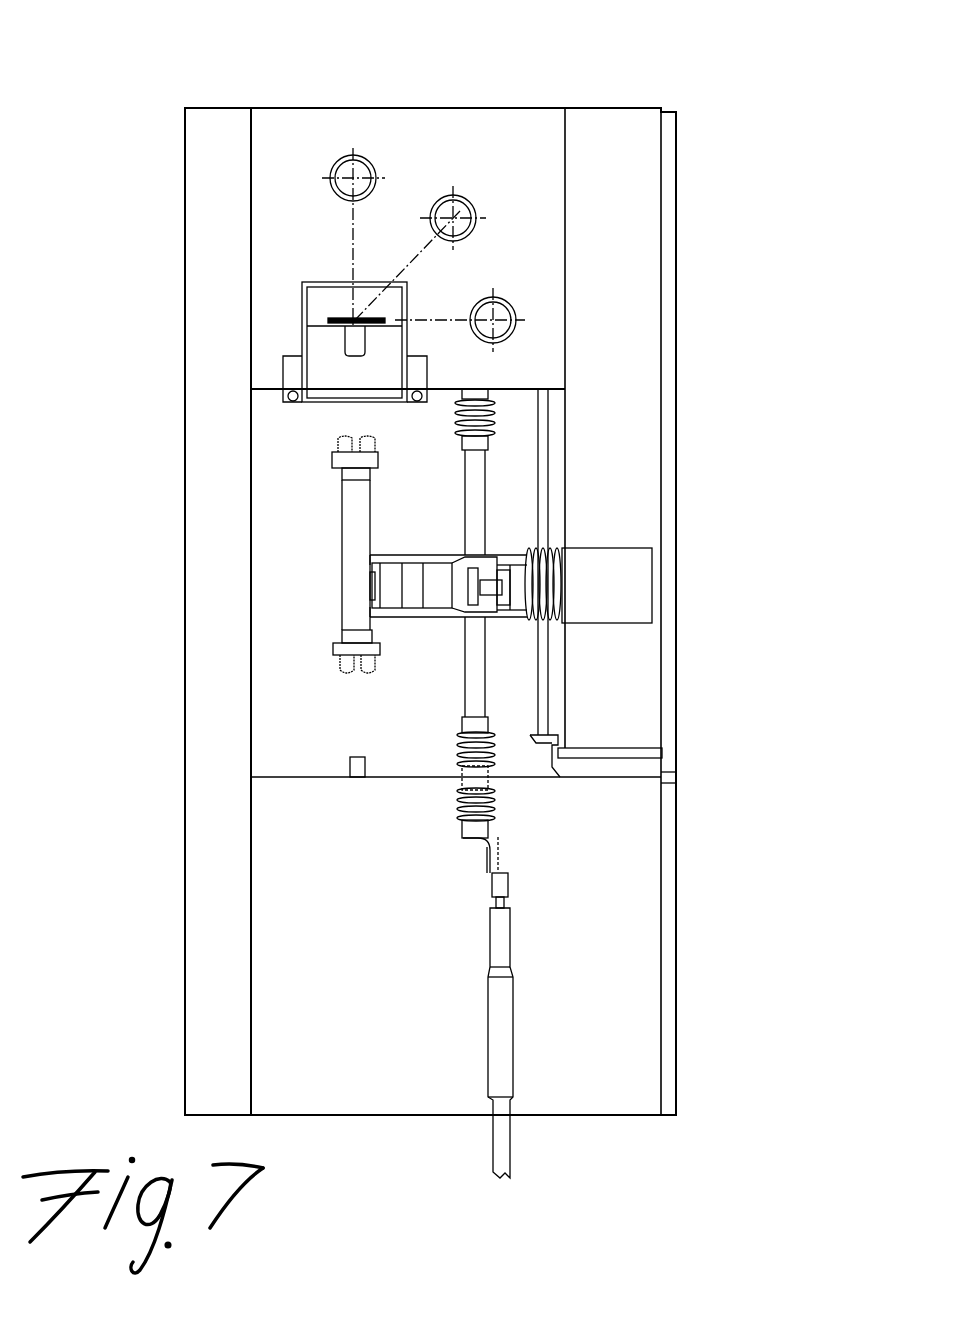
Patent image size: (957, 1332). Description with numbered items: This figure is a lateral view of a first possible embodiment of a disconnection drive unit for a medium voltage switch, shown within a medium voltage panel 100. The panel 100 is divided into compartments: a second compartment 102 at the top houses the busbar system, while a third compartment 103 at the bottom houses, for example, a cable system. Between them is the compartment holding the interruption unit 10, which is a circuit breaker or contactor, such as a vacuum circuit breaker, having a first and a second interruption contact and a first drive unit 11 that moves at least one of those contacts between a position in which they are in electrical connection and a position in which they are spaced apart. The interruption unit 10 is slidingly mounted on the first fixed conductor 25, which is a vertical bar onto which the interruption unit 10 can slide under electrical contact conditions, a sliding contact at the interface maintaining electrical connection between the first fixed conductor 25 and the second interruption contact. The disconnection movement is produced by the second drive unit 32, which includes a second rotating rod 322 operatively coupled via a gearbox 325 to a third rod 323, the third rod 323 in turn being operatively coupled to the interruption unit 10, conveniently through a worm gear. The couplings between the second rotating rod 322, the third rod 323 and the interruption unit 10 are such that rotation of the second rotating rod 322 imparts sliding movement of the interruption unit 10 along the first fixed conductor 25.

The medium voltage panel 100 is at (429, 90).
The second compartment 102 is at (533, 157).
The third compartment 103 is at (323, 1099).
The interruption unit 10 is at (398, 552).
The first drive unit 11 is at (603, 596).
The first fixed conductor 25 is at (468, 672).
The second drive unit 32 is at (659, 612).
The second rotating rod 322 is at (580, 730).
The third rod 323 is at (545, 463).
The gearbox 325 is at (560, 762).